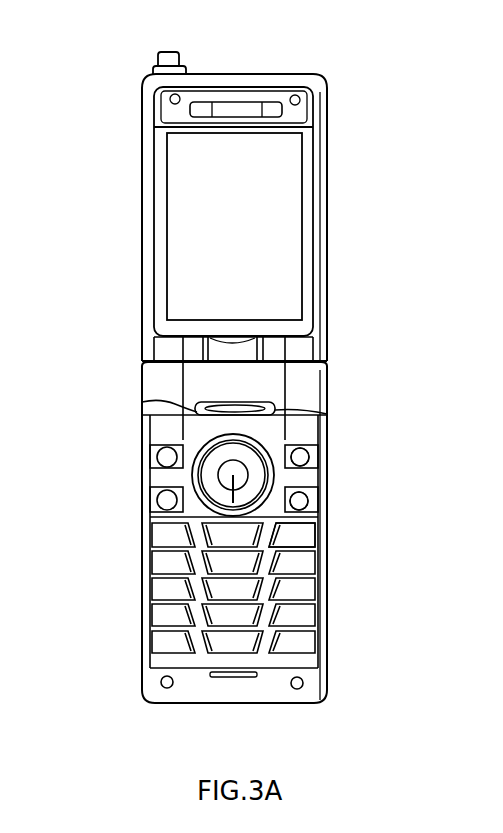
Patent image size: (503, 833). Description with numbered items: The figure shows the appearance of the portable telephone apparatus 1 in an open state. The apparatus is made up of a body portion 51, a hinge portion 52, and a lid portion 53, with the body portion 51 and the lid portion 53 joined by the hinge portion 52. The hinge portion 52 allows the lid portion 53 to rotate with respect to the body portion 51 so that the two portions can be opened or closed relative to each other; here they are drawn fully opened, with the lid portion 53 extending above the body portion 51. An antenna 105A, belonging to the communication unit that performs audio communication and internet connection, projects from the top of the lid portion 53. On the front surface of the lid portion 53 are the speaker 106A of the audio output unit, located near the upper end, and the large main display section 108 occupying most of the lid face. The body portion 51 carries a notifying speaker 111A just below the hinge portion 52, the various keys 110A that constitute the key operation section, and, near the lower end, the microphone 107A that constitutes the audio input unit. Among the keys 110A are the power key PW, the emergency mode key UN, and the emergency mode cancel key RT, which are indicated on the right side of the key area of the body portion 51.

The portable telephone apparatus 1 is at (419, 105).
The antenna 105A is at (157, 57).
The speaker 106A is at (245, 86).
The main display section 108 is at (303, 170).
The lid portion 53 is at (141, 230).
The hinge portion 52 is at (141, 367).
The notifying speaker 111A is at (203, 407).
The body portion 51 is at (141, 558).
The microphone 107A is at (227, 677).
The keys 110A is at (335, 438).
The emergency mode key UN is at (300, 457).
The emergency mode cancel key RT is at (300, 498).
The power key PW is at (300, 535).